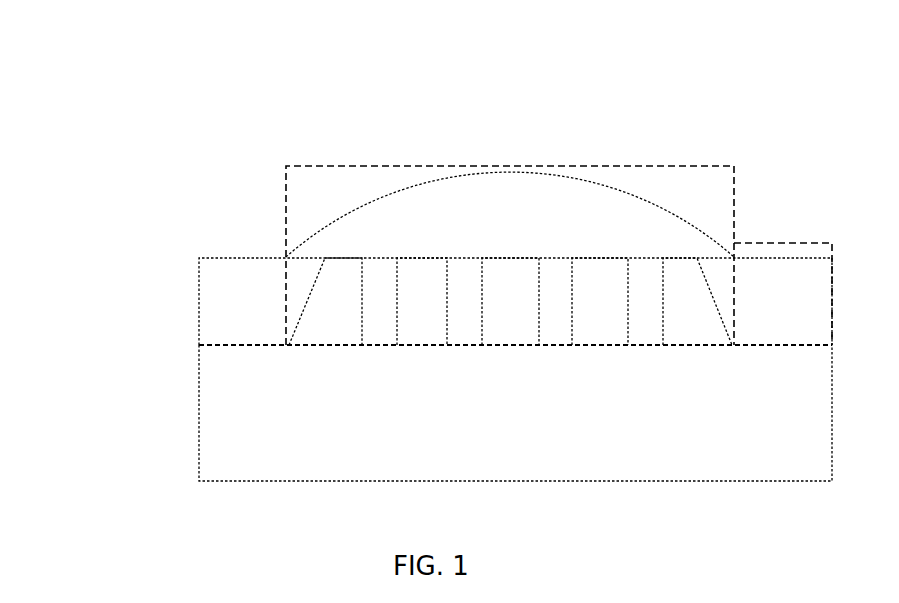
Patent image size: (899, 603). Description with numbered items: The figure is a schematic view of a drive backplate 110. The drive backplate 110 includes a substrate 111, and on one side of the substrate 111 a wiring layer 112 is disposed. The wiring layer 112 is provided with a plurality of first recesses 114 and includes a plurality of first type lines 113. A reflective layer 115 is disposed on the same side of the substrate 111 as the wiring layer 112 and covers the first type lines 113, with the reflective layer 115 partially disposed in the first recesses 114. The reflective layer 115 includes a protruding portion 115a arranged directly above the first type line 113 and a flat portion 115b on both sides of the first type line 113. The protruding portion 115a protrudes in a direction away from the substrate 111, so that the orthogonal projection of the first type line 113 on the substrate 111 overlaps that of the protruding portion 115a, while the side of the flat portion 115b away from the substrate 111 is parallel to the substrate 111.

The drive backplate 110 is at (118, 92).
The substrate 111 is at (227, 445).
The wiring layer 112 is at (404, 273).
The first type lines 113 is at (338, 318).
The first recesses 114 is at (382, 275).
The reflective layer 115 is at (223, 302).
The protruding portion 115a is at (485, 162).
The flat portion 115b is at (778, 240).